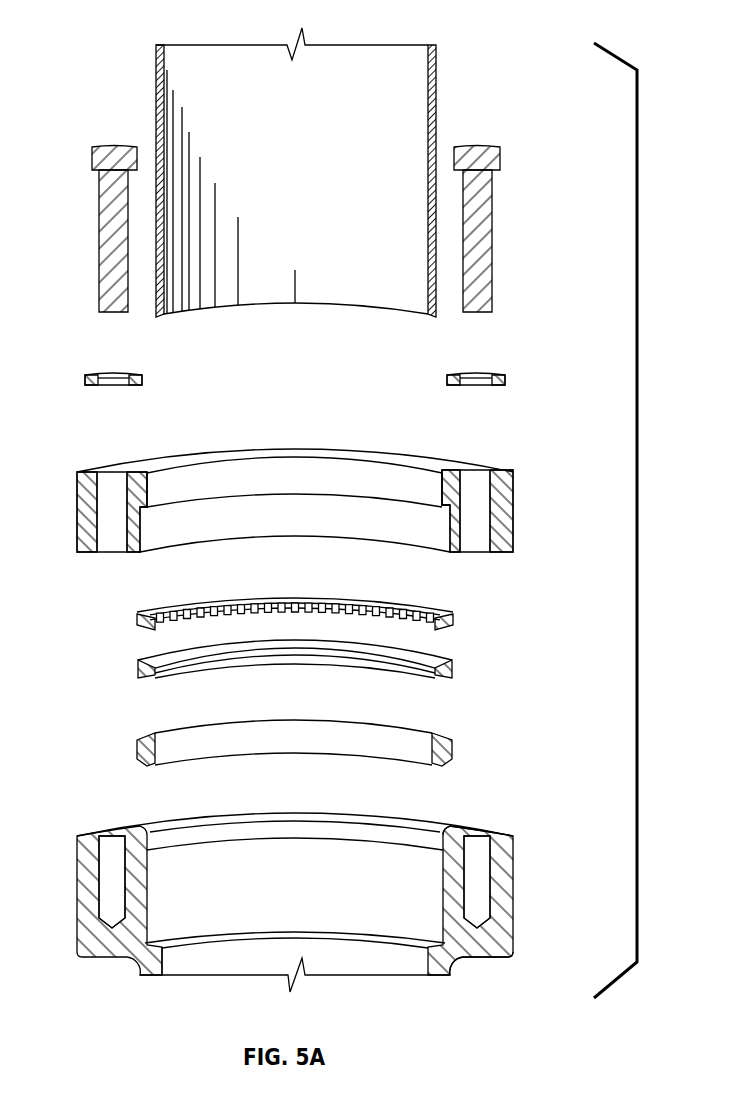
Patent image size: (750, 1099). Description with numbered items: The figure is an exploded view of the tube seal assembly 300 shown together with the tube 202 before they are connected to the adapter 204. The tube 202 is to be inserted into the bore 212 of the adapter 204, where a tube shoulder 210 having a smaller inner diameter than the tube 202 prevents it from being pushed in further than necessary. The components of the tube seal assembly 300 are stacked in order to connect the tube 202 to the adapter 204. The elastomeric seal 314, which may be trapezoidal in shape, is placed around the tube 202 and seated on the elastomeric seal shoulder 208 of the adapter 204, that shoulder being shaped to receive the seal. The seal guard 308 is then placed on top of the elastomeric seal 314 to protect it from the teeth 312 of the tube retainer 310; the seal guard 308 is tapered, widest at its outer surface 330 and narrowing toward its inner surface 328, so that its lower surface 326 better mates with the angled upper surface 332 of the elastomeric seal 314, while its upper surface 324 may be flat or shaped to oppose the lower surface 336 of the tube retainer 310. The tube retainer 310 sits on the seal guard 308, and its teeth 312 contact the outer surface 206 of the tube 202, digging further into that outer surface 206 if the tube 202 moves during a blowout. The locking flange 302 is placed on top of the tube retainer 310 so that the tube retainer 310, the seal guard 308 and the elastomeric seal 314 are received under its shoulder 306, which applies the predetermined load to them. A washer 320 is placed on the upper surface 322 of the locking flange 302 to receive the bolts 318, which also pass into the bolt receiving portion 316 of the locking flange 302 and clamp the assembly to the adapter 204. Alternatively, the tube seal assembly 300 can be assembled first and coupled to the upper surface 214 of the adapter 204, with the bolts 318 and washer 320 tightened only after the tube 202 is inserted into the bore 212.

The tube 202 is at (252, 58).
The adapter 204 is at (215, 960).
The outer surface 206 is at (438, 110).
The elastomeric seal shoulder 208 is at (150, 838).
The tube shoulder 210 is at (141, 975).
The bore 212 is at (488, 953).
The upper surface 214 is at (488, 836).
The tube seal assembly 300 is at (637, 508).
The locking flange 302 is at (457, 480).
The shoulder 306 is at (147, 506).
The seal guard 308 is at (452, 672).
The tube retainer 310 is at (452, 620).
The teeth 312 is at (250, 614).
The elastomeric seal 314 is at (452, 750).
The bolt receiving portion 316 is at (103, 285).
The bolts 318 is at (95, 163).
The washer 320 is at (85, 378).
The upper surface 322 is at (437, 461).
The upper surface 324 is at (163, 655).
The lower surface 326 is at (148, 683).
The inner surface 328 is at (438, 658).
The outer surface 330 is at (137, 673).
The upper surface 332 is at (148, 737).
The lower surface 336 is at (137, 620).